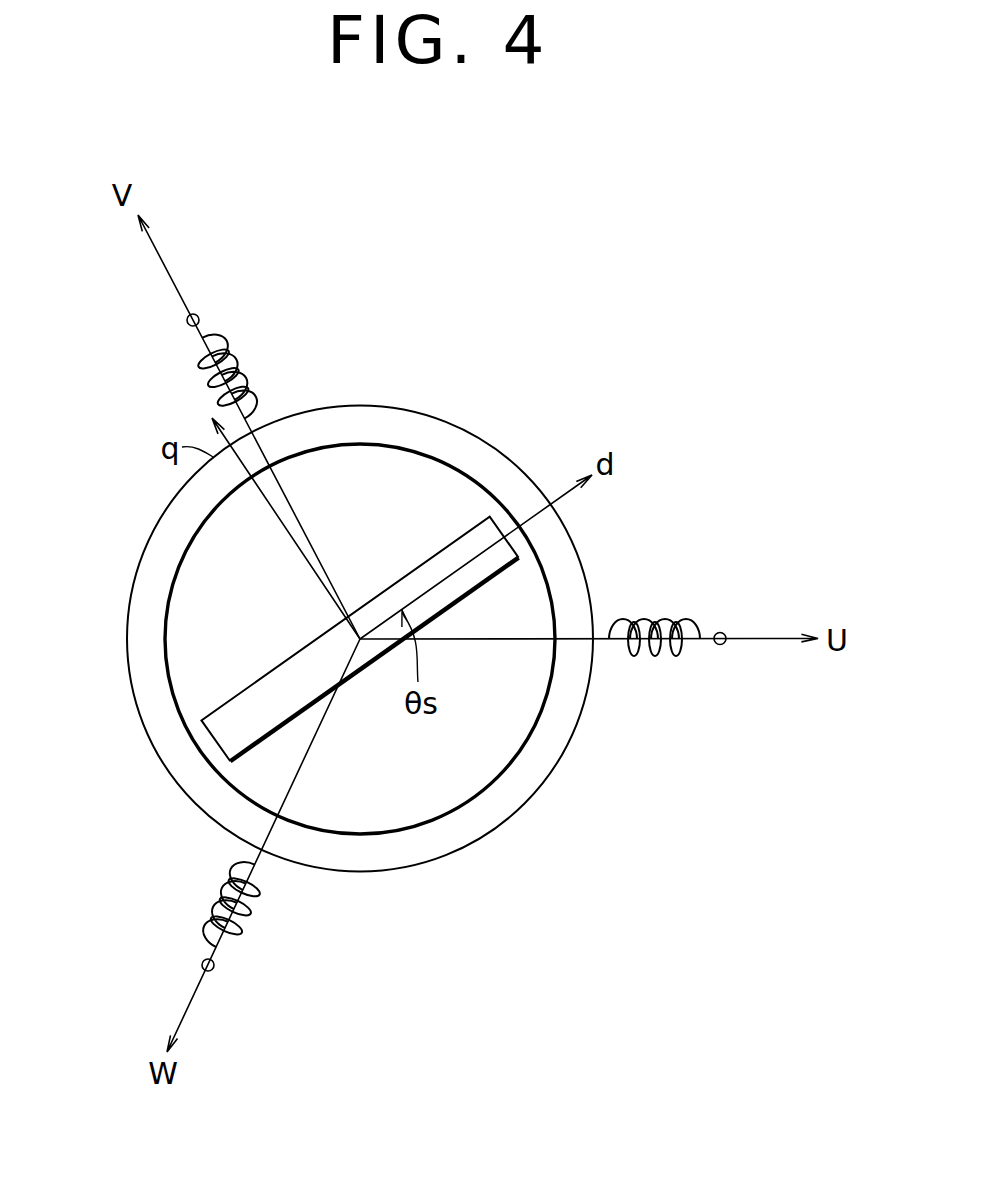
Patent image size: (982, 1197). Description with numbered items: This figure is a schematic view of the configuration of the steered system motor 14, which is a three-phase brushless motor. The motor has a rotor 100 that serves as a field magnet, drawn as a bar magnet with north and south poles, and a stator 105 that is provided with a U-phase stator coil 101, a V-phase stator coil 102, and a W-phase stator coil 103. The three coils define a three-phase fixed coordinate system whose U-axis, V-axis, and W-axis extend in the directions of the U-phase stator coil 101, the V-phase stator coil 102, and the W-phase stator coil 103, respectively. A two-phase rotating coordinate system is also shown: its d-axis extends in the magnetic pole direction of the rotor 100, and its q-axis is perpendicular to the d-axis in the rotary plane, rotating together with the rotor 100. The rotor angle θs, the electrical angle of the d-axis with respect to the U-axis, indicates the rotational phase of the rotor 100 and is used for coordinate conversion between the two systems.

The steered system motor 14 is at (517, 288).
The rotor 100 is at (267, 698).
The U-phase stator coil 101 is at (643, 616).
The V-phase stator coil 102 is at (232, 352).
The W-phase stator coil 103 is at (220, 902).
The stator 105 is at (545, 750).